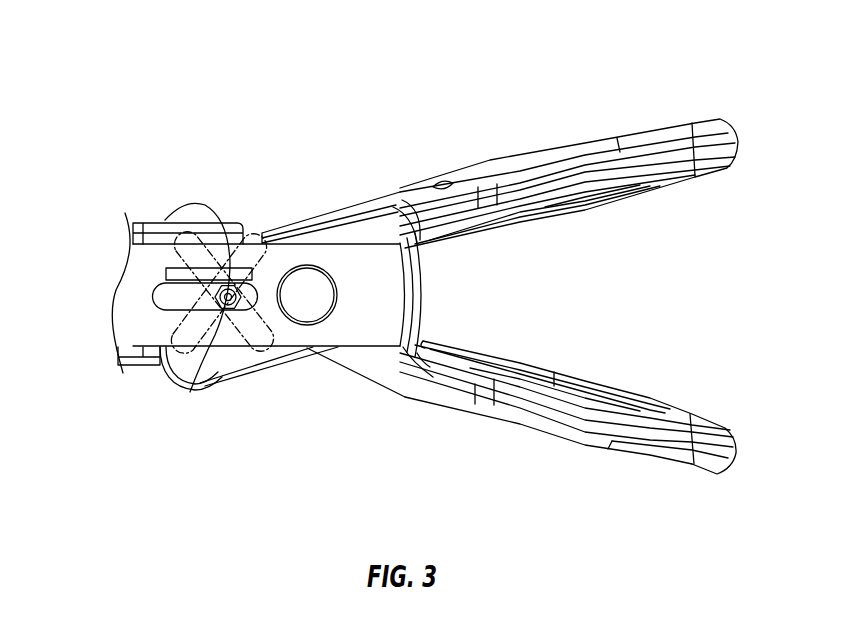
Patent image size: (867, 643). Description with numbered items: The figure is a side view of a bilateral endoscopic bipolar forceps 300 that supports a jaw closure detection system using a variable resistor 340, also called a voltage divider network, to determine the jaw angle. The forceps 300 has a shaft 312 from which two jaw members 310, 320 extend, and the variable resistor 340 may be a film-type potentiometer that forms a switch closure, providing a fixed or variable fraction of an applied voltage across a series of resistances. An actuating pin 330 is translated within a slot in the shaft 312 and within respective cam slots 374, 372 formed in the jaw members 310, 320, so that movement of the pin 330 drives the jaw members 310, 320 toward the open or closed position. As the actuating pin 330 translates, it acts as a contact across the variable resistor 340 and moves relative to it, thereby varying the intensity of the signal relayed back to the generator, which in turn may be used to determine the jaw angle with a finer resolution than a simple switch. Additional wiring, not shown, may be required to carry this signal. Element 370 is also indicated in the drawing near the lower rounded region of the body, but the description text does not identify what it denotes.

The forceps 300 is at (205, 82).
The jaw member 310 is at (560, 135).
The shaft 312 is at (387, 295).
The jaw member 320 is at (538, 471).
The actuating pin 330 is at (222, 226).
The variable resistor 340 is at (280, 225).
The cam flange 370 is at (222, 377).
The cam slot 372 is at (178, 258).
The cam slot 374 is at (185, 333).